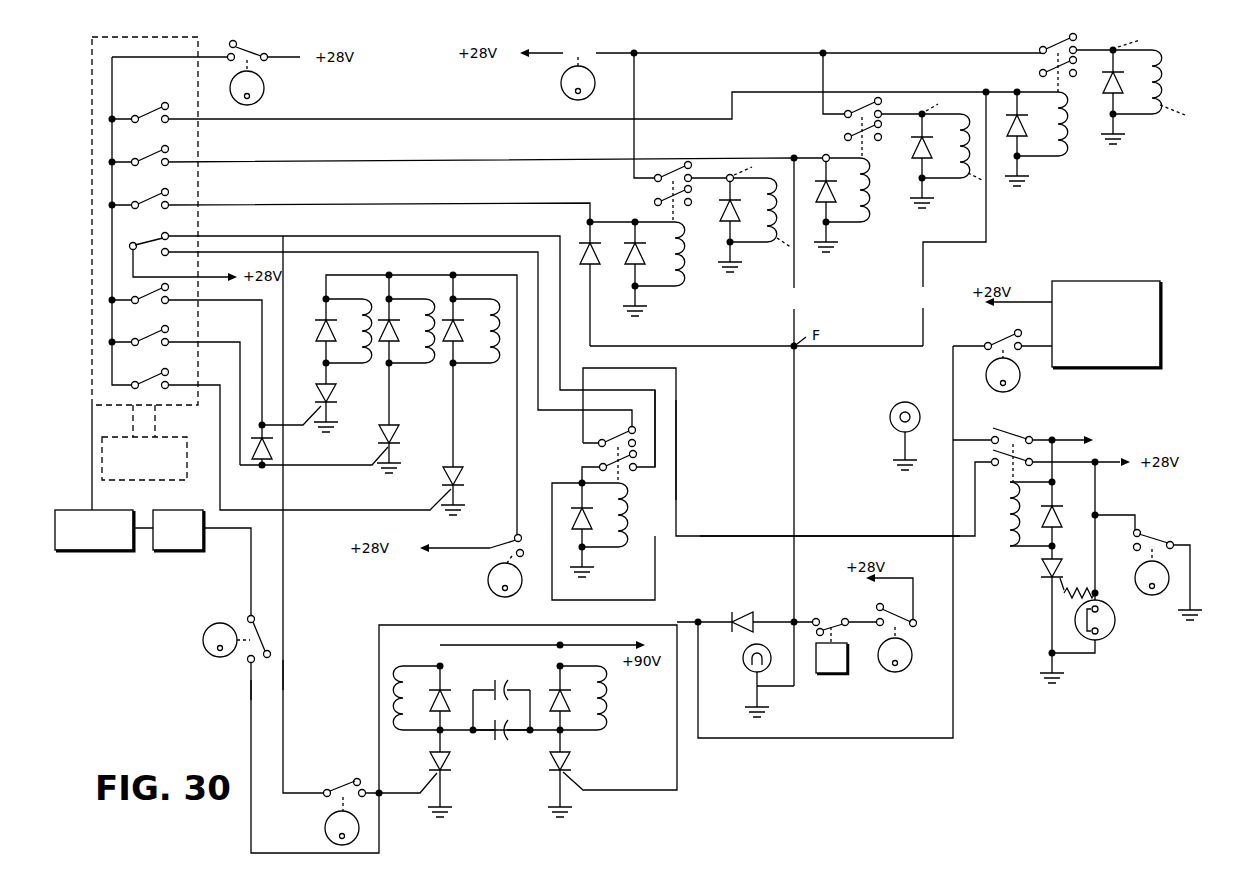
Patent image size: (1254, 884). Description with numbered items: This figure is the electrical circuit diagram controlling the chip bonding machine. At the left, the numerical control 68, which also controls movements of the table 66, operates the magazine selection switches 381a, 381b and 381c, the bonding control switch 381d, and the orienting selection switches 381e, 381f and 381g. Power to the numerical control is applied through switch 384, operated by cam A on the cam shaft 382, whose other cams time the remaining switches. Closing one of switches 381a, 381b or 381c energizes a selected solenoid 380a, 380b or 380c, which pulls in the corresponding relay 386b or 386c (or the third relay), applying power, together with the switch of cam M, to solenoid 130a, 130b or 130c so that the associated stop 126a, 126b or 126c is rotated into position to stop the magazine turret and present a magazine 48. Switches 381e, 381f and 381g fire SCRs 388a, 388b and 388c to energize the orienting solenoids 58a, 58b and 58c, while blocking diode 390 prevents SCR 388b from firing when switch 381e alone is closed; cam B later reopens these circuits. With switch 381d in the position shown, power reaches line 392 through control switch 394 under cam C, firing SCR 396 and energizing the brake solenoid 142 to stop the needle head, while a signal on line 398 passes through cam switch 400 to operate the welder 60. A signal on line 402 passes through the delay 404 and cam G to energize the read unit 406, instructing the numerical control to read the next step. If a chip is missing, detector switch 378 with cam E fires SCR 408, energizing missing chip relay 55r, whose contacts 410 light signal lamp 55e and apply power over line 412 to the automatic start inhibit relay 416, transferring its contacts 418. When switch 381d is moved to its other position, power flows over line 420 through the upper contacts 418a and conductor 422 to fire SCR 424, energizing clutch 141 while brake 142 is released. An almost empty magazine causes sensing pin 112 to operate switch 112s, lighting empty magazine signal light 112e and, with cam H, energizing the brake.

The numerical control 68 is at (92, 98).
The magazine selection switch 381a is at (158, 110).
The magazine selection switch 381b is at (150, 154).
The magazine selection switch 381c is at (150, 198).
The bonding control switch 381d is at (142, 238).
The orienting selection switch 381e is at (153, 305).
The plus 180° switch 381f is at (155, 345).
The orienting selection switch 381g is at (147, 387).
The switch 384 is at (249, 52).
The cam shaft 382 is at (262, 99).
The relay 386b is at (866, 102).
The relay 386c is at (686, 165).
The stop 126a is at (1165, 130).
The stop 126b is at (946, 104).
The stop 126c is at (755, 160).
The solenoid 130a is at (1154, 48).
The solenoid 130b is at (948, 186).
The solenoid 130c is at (766, 244).
The solenoid 380a is at (1065, 173).
The solenoid 380b is at (864, 220).
The solenoid 380c is at (678, 287).
The line 420 is at (468, 237).
The orienting solenoid 58a is at (367, 364).
The orienting solenoid 58b is at (494, 364).
The orienting solenoid 58c is at (430, 364).
The SCR 388a is at (332, 400).
The SCR 388b is at (396, 443).
The SCR 388c is at (458, 478).
The blocking diode 390 is at (259, 467).
The upper set of contacts 418a is at (621, 438).
The contacts 418 is at (629, 470).
The automatic start inhibit relay 416 is at (628, 512).
The conductor 422 is at (676, 496).
The table 66 is at (160, 481).
The read unit 406 is at (112, 553).
The delay 404 is at (178, 553).
The welder 60 is at (1110, 280).
The cam switch 400 is at (991, 338).
The signal lamp 55e is at (914, 403).
The contacts 410 is at (1018, 428).
The line 412 is at (884, 536).
The missing chip relay 55r is at (1008, 535).
The SCR 408 is at (1044, 570).
The missing chip detector switch 378 is at (1105, 625).
The line 398 is at (432, 625).
The brake solenoid 142 is at (420, 656).
The clutch 141 is at (612, 689).
The SCR 396 is at (452, 762).
The SCR 424 is at (569, 771).
The empty magazine signal light 112e is at (747, 664).
The magazine detector switch 112s is at (827, 623).
The empty magazine detection pin 112 is at (832, 644).
The magazine 48 is at (830, 677).
The line 392 is at (286, 676).
The line 402 is at (250, 687).
The control switch 394 is at (349, 780).